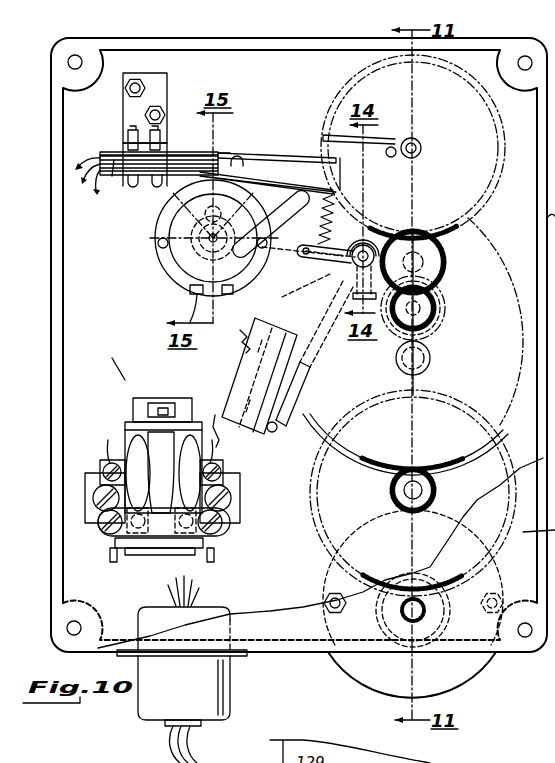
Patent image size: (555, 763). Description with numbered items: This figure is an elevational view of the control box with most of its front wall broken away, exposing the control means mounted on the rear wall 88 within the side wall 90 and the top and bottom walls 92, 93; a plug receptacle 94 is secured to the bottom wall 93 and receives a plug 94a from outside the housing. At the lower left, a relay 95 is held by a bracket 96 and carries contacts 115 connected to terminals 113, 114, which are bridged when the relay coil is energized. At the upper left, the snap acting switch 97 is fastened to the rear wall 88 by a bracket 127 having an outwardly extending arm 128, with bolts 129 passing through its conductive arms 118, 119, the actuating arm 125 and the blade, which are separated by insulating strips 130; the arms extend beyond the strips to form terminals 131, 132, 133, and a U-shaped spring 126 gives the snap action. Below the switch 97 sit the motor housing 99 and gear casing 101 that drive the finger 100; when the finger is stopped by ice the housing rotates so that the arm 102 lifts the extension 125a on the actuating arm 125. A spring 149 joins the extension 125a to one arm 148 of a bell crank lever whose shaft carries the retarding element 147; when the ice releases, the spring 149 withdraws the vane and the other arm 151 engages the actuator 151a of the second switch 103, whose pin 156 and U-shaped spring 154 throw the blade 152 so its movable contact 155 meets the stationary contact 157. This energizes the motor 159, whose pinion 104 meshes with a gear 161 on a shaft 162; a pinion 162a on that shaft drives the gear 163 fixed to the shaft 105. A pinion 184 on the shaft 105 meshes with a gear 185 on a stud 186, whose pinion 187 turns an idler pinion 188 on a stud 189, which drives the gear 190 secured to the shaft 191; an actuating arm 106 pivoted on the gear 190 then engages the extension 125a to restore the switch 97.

The rear wall 88 is at (112, 358).
The side wall 90 is at (50, 343).
The top wall 92 is at (282, 38).
The bottom wall 93 is at (313, 652).
The plug receptacle 94 is at (138, 615).
The plug 94a is at (231, 692).
The relay 95 is at (112, 422).
The bracket 96 is at (86, 482).
The switch 97 is at (175, 152).
The motor housing 99 is at (183, 286).
The finger 100 is at (276, 158).
The gear casing 101 is at (163, 274).
The arm 102 is at (280, 218).
The second switch 103 is at (228, 378).
The pinion 104 is at (432, 620).
The shaft 105 is at (430, 365).
The actuating arm 106 is at (328, 136).
The terminal 113 is at (105, 540).
The terminal 114 is at (224, 546).
The contacts 115 is at (153, 548).
The conductive arm 118 is at (222, 152).
The conductive arm 119 is at (143, 181).
The actuating arm 125 is at (257, 150).
The extension 125a is at (350, 172).
The U-shaped spring 126 is at (234, 156).
The bracket 127 is at (164, 88).
The arm 128 is at (130, 136).
The bolts 129 is at (138, 130).
The insulating strips 130 is at (112, 176).
The terminal 131 is at (110, 157).
The terminal 132 is at (102, 176).
The terminal 133 is at (110, 210).
The retarding element 147 is at (329, 358).
The bell crank lever arm 148 is at (319, 240).
The spring 149 is at (324, 190).
The bell crank lever arm 151 is at (378, 230).
The actuator 151a is at (306, 385).
The blade 152 is at (242, 335).
The U-shaped spring 154 is at (280, 422).
The movable contact 155 is at (278, 313).
The pin 156 is at (277, 433).
The stationary contact 157 is at (270, 354).
The motor 159 is at (474, 668).
The gear 161 is at (418, 493).
The shaft 162 is at (408, 502).
The pinion 162a is at (392, 487).
The gear 163 is at (464, 460).
The pinion 184 is at (432, 355).
The gear 185 is at (440, 335).
The stud 186 is at (437, 312).
The pinion 187 is at (440, 293).
The idler pinion 188 is at (447, 263).
The stud 189 is at (424, 228).
The gear 190 is at (460, 233).
The shaft 191 is at (423, 145).